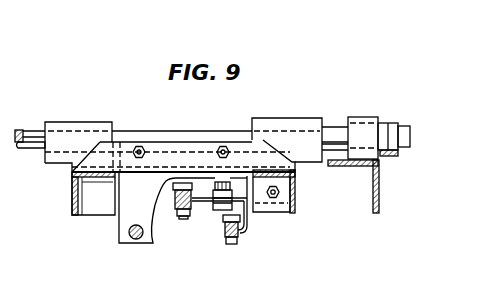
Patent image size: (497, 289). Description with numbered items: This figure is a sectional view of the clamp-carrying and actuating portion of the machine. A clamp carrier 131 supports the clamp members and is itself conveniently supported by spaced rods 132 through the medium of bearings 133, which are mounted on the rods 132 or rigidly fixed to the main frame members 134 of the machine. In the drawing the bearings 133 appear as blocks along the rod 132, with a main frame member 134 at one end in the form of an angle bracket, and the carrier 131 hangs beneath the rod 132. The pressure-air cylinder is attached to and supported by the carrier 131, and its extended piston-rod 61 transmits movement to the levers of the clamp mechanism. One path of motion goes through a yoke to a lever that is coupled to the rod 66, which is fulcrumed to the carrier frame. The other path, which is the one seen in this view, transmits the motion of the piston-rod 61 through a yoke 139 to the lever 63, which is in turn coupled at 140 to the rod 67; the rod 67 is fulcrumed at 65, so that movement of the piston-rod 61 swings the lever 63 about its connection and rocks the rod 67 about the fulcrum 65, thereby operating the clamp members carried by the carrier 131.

The piston-rod 61 is at (167, 192).
The lever 63 is at (203, 208).
The fulcrum 65 is at (219, 172).
The rod 66 is at (135, 240).
The rod 67 is at (230, 245).
The clamp carrier 131 is at (62, 182).
The spaced rods 132 is at (183, 131).
The bearings 133 is at (76, 122).
The main frame members 134 is at (380, 196).
The yoke 139 is at (185, 219).
The coupling 140 is at (241, 238).